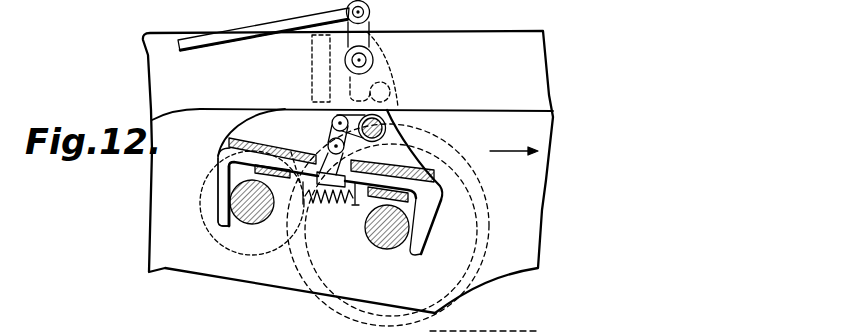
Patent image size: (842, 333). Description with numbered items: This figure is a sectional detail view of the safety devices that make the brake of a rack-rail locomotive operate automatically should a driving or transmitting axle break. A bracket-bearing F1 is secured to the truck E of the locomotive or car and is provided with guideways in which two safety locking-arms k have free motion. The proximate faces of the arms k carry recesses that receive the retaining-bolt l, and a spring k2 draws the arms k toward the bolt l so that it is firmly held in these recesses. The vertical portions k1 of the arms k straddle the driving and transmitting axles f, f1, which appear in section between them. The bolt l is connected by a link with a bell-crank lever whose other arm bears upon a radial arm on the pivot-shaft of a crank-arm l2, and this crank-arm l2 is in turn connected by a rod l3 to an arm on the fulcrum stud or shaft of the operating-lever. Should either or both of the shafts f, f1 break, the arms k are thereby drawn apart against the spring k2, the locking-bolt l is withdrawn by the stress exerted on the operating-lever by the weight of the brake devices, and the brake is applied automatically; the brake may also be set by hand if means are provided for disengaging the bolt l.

The truck E is at (348, 172).
The rail or wheel body F1 is at (410, 153).
The rod l3 is at (211, 33).
The crank-arm l2 is at (370, 22).
The retaining-bolt l is at (393, 108).
The safety locking-arms k is at (221, 163).
The vertical portions of the arms k1 is at (430, 252).
The spring k2 is at (345, 200).
The driving shaft f is at (252, 213).
The transmitting shaft f1 is at (378, 238).